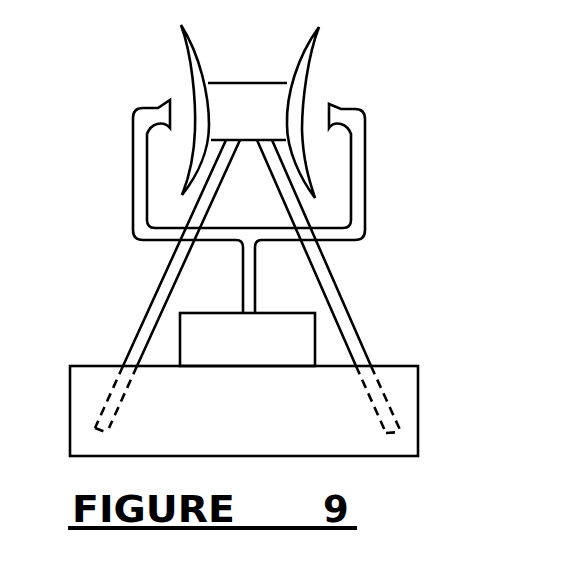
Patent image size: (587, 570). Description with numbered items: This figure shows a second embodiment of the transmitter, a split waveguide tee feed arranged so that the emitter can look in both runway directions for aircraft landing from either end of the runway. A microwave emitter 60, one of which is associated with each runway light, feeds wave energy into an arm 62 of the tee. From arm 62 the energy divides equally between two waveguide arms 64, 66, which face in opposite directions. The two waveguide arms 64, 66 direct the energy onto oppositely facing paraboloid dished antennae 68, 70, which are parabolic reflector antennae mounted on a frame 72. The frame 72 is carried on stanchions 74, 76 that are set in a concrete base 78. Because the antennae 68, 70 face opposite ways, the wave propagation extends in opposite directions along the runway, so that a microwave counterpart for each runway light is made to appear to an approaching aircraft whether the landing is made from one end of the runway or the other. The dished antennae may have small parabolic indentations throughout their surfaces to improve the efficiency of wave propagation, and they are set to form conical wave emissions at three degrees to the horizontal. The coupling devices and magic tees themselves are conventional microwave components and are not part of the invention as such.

The microwave emitter 60 is at (300, 347).
The arm 62 is at (248, 292).
The waveguide arm 64 is at (140, 178).
The waveguide arm 66 is at (355, 178).
The parabolic reflector antenna 68 is at (187, 63).
The parabolic reflector antenna 70 is at (310, 57).
The frame 72 is at (252, 97).
The stanchion 74 is at (145, 330).
The stanchion 76 is at (357, 352).
The concrete base 78 is at (350, 417).